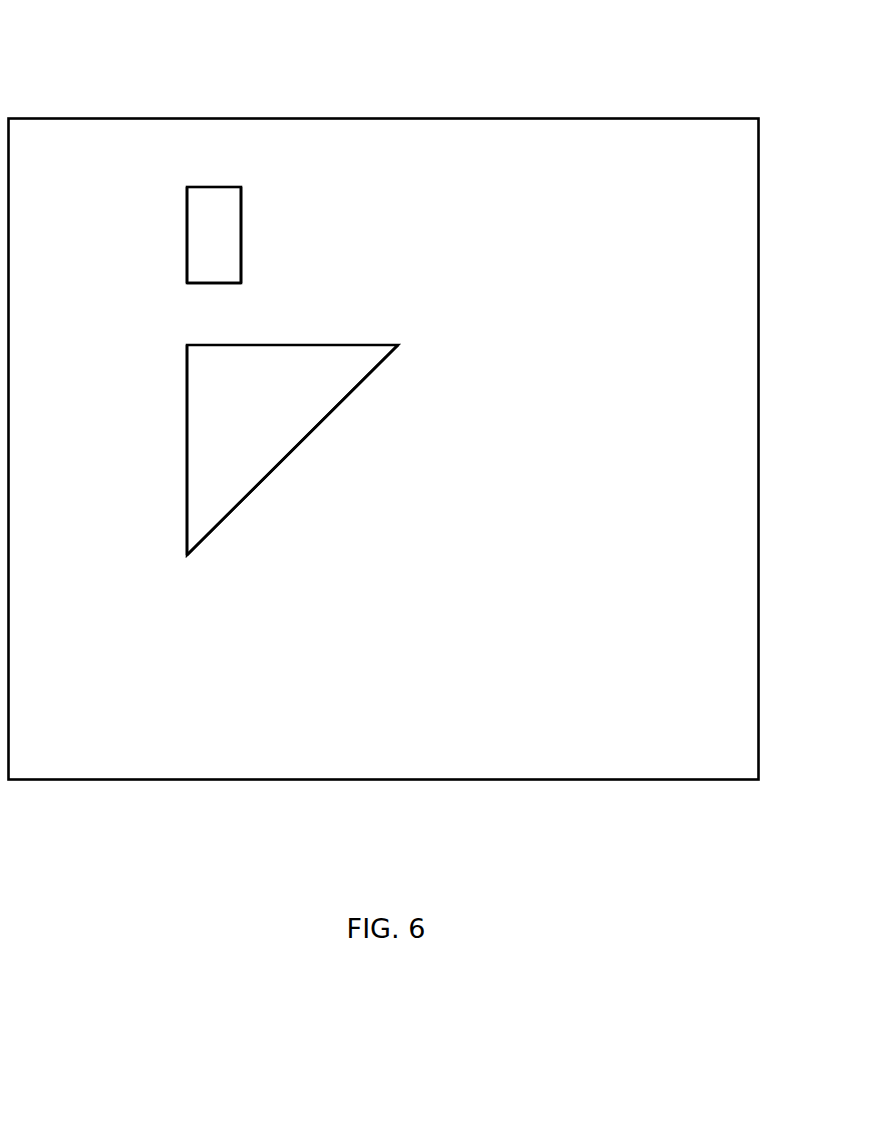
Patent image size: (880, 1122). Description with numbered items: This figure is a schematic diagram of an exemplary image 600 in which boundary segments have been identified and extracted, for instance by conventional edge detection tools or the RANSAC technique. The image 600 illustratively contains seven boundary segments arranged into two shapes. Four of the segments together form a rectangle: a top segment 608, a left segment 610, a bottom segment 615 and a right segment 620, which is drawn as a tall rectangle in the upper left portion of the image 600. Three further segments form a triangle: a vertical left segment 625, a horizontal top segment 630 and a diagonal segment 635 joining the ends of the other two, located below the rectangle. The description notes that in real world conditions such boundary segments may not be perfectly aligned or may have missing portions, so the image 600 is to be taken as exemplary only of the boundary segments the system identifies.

The image 600 is at (648, 76).
The rectangle top edge 608 is at (217, 187).
The boundary segment 610 is at (187, 237).
The boundary segment 615 is at (215, 283).
The boundary segment 620 is at (241, 236).
The boundary segment 625 is at (187, 446).
The boundary segment 630 is at (323, 345).
The boundary segment 635 is at (295, 448).